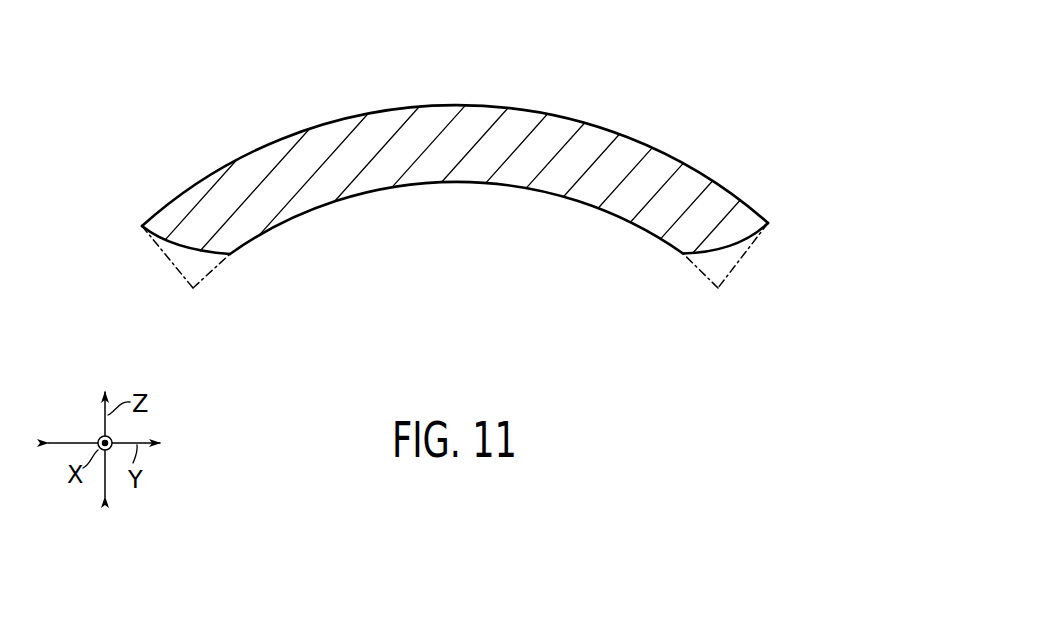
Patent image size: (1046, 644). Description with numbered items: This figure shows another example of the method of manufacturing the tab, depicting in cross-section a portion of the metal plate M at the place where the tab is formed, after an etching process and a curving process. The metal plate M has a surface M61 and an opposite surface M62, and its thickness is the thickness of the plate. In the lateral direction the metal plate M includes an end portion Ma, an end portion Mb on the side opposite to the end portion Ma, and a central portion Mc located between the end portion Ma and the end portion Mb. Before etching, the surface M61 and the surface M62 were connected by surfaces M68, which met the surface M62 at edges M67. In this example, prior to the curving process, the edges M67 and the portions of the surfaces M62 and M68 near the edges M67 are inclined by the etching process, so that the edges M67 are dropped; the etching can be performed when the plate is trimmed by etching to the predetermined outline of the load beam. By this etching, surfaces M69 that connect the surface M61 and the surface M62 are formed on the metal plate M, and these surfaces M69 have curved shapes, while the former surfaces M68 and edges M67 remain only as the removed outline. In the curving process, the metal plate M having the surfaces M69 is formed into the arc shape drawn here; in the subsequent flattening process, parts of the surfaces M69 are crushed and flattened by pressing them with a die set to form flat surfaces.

The metal plate M is at (462, 192).
The end portion Ma is at (793, 240).
The end portion Mb is at (132, 240).
The central portion Mc is at (482, 88).
The surface M61 is at (581, 121).
The surface M62 is at (573, 201).
The edge M67 is at (190, 296).
The third surface M68 is at (180, 275).
The surface M69 is at (157, 237).